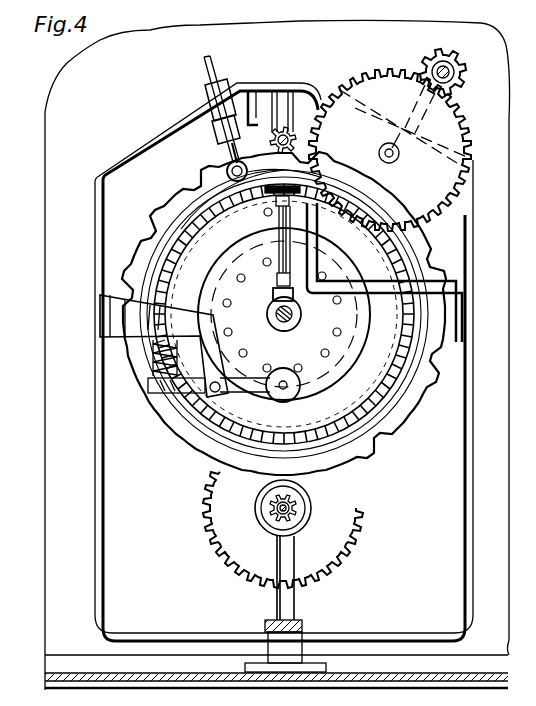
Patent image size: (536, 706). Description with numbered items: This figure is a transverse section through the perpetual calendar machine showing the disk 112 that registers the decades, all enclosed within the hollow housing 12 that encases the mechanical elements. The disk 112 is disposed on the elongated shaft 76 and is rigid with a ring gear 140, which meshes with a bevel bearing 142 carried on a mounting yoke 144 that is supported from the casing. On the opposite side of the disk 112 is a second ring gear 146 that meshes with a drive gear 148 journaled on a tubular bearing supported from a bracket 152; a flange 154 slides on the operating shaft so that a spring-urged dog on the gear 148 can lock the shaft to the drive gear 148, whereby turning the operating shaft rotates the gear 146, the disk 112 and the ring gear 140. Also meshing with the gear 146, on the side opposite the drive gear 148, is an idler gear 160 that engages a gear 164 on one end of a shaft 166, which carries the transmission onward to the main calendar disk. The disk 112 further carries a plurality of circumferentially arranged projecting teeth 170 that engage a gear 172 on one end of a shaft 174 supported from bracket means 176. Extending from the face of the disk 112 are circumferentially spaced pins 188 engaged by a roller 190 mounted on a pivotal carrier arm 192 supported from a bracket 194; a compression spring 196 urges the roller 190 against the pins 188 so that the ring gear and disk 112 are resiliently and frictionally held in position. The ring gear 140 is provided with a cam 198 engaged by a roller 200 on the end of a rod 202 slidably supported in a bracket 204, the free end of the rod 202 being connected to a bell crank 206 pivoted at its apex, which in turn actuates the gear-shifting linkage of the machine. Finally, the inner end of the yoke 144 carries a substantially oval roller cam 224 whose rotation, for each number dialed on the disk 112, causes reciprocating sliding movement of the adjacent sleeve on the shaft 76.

The housing 12 is at (505, 670).
The elongated shaft 76 is at (282, 332).
The disk 112 is at (415, 382).
The ring gear 140 is at (173, 243).
The bevel bearing 142 is at (270, 207).
The yoke 144 is at (302, 245).
The ring gear 146 is at (378, 425).
The drive gear 148 is at (345, 528).
The bracket 152 is at (287, 600).
The flange 154 is at (297, 507).
The idler gear 160 is at (453, 118).
The gear 164 is at (466, 62).
The shaft 166 is at (437, 62).
The projecting teeth 170 is at (167, 440).
The gear 172 is at (290, 130).
The shaft 174 is at (272, 143).
The bracket means 176 is at (281, 103).
The pins 188 is at (336, 336).
The roller 190 is at (301, 383).
The pivotal carrier arm 192 is at (248, 378).
The bracket 194 is at (213, 332).
The compression spring 196 is at (152, 358).
The cam 198 is at (233, 187).
The roller 200 is at (254, 169).
The rod 202 is at (227, 155).
The bracket 204 is at (250, 86).
The bell crank 206 is at (208, 87).
The roller cam 224 is at (300, 297).